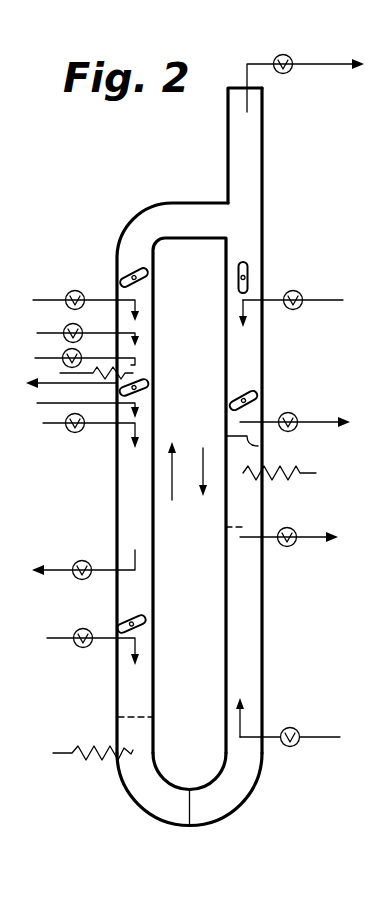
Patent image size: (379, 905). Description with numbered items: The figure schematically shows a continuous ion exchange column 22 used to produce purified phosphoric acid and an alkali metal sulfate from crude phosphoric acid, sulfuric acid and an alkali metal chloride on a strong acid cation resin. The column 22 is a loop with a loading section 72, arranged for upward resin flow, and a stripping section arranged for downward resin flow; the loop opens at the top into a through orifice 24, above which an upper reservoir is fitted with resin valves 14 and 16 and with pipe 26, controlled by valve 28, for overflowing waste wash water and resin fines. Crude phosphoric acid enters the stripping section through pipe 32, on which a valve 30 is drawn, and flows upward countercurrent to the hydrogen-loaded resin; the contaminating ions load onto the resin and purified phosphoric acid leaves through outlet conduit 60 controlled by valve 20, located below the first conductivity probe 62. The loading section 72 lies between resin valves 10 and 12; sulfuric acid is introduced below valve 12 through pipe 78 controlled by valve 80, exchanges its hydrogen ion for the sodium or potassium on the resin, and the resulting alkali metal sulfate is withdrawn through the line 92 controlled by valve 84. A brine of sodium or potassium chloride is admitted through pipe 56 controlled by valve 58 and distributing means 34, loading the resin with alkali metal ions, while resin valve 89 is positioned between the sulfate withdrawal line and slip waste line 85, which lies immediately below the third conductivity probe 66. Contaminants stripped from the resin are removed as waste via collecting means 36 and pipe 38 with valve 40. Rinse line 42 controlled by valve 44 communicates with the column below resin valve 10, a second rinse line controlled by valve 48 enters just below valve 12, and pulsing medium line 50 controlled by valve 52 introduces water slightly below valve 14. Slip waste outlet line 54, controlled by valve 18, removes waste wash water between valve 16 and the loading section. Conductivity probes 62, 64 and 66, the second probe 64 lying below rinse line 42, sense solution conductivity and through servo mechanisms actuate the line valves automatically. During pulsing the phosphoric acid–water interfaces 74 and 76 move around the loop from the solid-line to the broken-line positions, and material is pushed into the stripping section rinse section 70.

The resin valve 10 is at (145, 622).
The resin valve 12 is at (148, 273).
The resin valve 14 is at (247, 264).
The resin valve 16 is at (257, 395).
The valve 18 is at (296, 401).
The valve 20 is at (283, 547).
The continuous ion exchange column 22 is at (135, 205).
The through orifice 24 is at (246, 234).
The pipe 26 is at (246, 65).
The valve 28 is at (291, 58).
The valve 30 is at (298, 730).
The pipe 32 is at (320, 740).
The distributing means 34 is at (247, 706).
The collecting means 36 is at (152, 554).
The pipe 38 is at (50, 566).
The valve 40 is at (90, 563).
The rinse line 42 is at (52, 641).
The valve 44 is at (90, 631).
The valve 48 is at (68, 293).
The pulsing medium line 50 is at (322, 303).
The valve 52 is at (301, 294).
The slip waste outlet line 54 is at (322, 418).
The pipe 56 is at (103, 426).
The valve 58 is at (70, 433).
The purified phosphoric acid outlet conduit 60 is at (315, 542).
The first conductivity probe 62 is at (296, 478).
The second conductivity probe 64 is at (94, 763).
The third conductivity probe 66 is at (133, 373).
The stripping section rinse section 70 is at (138, 784).
The loading section 72 is at (148, 327).
The phosphoric acid–water interface 74 is at (244, 527).
The phosphoric acid–water interface 76 is at (142, 717).
The pipe 78 is at (49, 333).
The valve 80 is at (84, 326).
The valve 84 is at (62, 354).
The slip waste line 85 is at (38, 385).
The resin valve 89 is at (98, 403).
The line 92 is at (35, 358).